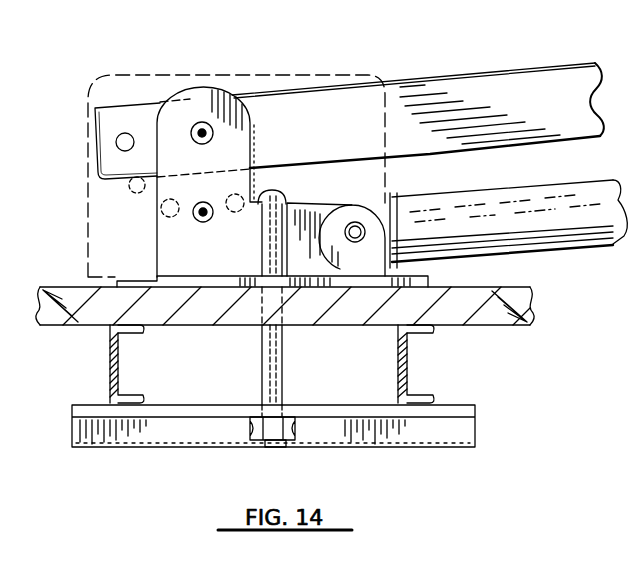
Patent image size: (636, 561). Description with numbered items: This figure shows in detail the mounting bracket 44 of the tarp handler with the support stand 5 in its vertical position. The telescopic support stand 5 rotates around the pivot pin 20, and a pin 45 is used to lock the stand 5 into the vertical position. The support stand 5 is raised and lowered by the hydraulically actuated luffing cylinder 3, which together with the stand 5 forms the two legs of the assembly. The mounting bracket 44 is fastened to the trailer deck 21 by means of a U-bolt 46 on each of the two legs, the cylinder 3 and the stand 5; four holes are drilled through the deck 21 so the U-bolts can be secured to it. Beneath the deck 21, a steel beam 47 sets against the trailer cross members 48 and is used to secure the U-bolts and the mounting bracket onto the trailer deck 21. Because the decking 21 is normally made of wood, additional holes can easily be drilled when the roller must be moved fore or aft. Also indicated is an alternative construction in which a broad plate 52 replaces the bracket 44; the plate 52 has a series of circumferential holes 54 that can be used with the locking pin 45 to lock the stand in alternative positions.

The luffing cylinder 3 is at (557, 216).
The support stand 5 is at (503, 90).
The pivot pin 20 is at (206, 147).
The trailer deck 21 is at (462, 285).
The mounting bracket 44 is at (244, 150).
The pin 45 is at (207, 223).
The U-bolt 46 is at (262, 258).
The steel beam 47 is at (226, 432).
The trailer cross members 48 is at (121, 370).
The broad plate 52 is at (117, 68).
The circumferential holes 54 is at (130, 190).